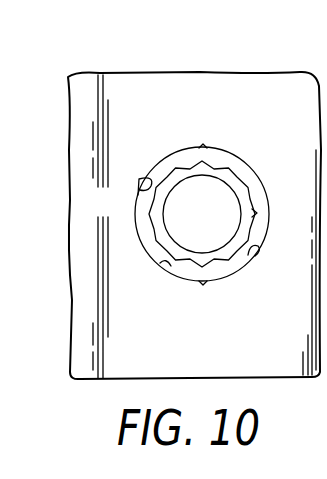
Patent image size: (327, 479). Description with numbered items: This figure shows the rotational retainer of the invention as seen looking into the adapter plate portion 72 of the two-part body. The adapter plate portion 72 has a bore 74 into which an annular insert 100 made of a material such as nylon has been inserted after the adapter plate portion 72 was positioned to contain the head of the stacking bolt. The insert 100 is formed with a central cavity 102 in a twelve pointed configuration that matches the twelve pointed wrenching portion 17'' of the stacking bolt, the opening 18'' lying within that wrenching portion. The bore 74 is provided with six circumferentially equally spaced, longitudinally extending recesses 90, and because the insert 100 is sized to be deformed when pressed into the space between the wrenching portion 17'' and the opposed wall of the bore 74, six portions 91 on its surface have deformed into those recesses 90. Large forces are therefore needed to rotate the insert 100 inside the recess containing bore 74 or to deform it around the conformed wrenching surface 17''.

The adapter plate portion 72 is at (98, 282).
The annular insert 100 is at (175, 141).
The twelve pointed wrenching portion 17'' is at (228, 191).
The central opening 18'' is at (202, 214).
The deformed portions 91 is at (203, 143).
The central cavity 102 is at (256, 211).
The recesses 90 is at (136, 194).
The bore 74 is at (165, 270).